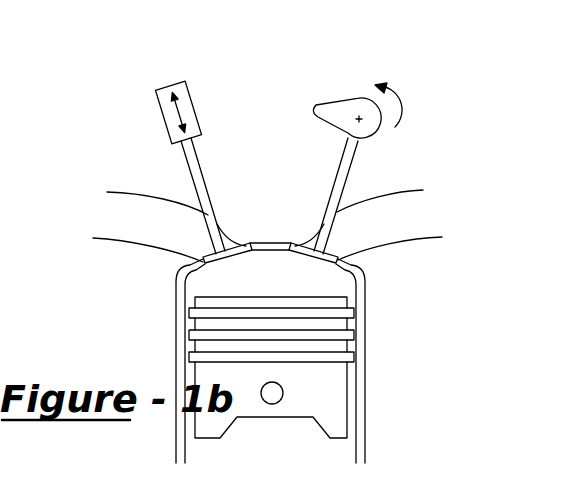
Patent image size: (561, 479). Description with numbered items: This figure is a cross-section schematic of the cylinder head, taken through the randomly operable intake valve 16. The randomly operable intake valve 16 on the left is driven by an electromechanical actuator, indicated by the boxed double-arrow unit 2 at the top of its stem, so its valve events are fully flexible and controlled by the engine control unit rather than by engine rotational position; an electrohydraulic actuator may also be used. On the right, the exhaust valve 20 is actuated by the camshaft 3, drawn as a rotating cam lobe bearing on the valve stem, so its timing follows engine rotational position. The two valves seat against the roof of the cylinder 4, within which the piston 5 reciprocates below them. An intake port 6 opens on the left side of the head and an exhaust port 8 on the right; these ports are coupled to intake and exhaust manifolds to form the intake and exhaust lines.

The camshaft 2 is at (162, 118).
The camshaft 3 is at (340, 98).
The cylinder 4 is at (183, 359).
The piston 5 is at (332, 397).
The intake port 6 is at (157, 246).
The exhaust port 8 is at (392, 240).
The randomly operable intake valve 16 is at (207, 185).
The exhaust valve 20 is at (333, 187).